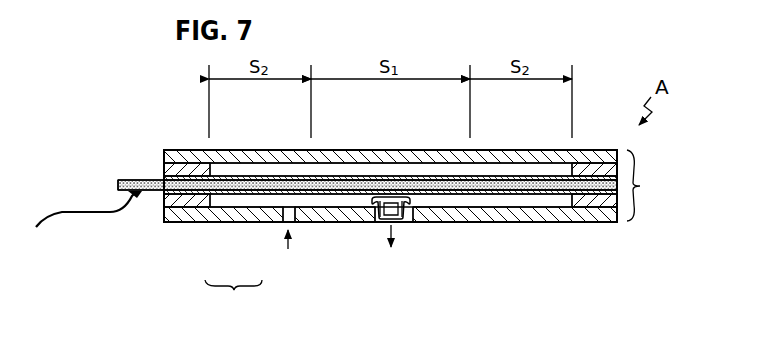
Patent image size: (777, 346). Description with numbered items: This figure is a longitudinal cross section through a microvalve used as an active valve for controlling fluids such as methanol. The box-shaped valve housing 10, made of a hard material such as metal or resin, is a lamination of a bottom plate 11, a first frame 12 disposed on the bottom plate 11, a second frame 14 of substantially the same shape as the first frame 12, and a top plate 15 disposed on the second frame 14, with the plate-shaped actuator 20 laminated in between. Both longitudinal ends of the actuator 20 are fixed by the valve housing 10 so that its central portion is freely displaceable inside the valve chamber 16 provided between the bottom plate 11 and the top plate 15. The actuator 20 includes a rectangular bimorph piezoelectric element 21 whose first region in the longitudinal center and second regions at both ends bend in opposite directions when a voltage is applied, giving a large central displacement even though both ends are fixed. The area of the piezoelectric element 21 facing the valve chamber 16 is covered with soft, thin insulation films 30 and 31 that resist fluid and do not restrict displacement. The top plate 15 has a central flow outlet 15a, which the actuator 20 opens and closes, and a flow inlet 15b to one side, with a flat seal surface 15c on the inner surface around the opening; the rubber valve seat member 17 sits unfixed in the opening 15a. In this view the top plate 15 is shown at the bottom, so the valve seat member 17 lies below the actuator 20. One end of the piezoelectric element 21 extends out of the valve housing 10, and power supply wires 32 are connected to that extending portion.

The valve housing 10 is at (652, 185).
The bottom plate 11 is at (432, 151).
The first frame 12 is at (595, 170).
The second frame 14 is at (594, 208).
The top plate 15 is at (467, 223).
The flow outlet 15a is at (405, 223).
The flow inlet 15b is at (296, 222).
The seal surface 15c is at (423, 207).
The valve chamber 16 is at (524, 182).
The valve seat member 17 is at (380, 222).
The actuator 20 is at (233, 297).
The piezoelectric element 21 is at (263, 190).
The insulation film 30 is at (227, 202).
The insulation film 31 is at (240, 177).
The power supply wires 32 is at (72, 212).